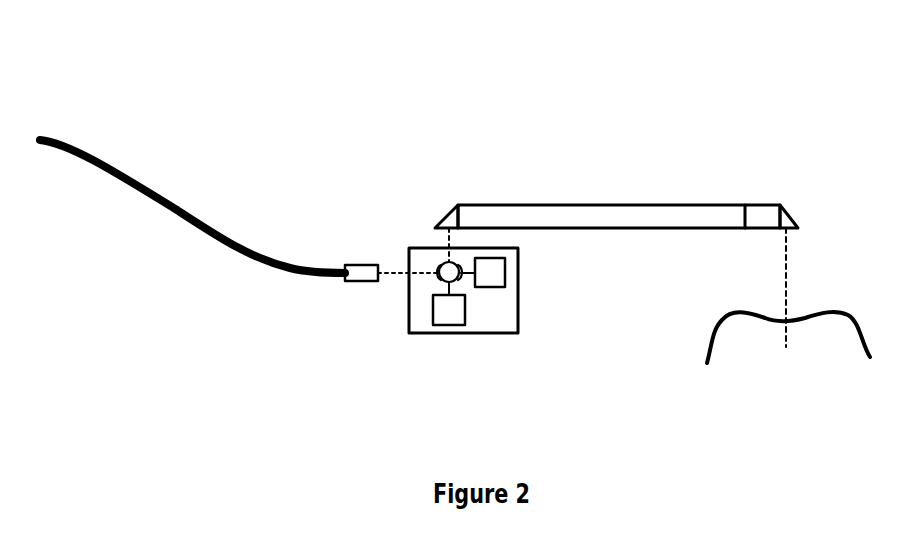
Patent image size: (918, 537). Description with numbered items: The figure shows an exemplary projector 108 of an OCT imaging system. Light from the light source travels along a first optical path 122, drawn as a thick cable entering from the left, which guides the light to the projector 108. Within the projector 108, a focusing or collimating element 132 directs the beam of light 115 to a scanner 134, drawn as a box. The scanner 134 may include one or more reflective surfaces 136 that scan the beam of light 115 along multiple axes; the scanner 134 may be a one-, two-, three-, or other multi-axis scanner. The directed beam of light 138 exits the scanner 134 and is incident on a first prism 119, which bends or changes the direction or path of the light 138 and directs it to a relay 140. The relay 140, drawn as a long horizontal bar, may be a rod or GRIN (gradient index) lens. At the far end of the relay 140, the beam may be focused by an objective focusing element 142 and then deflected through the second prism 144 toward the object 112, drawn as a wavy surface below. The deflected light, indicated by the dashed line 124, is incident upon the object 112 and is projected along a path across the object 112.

The projector 108 is at (395, 71).
The object 112 is at (747, 315).
The beam of light 115 is at (392, 265).
The first prism 119 is at (448, 218).
The first optical path 122 is at (172, 205).
The light beam 124 is at (788, 287).
The focusing or collimating element 132 is at (362, 283).
The scanner 134 is at (407, 333).
The reflective surfaces 136 is at (456, 281).
The directed beam of light 138 is at (450, 238).
The relay 140 is at (545, 203).
The objective focusing element 142 is at (760, 205).
The second prism 144 is at (787, 210).